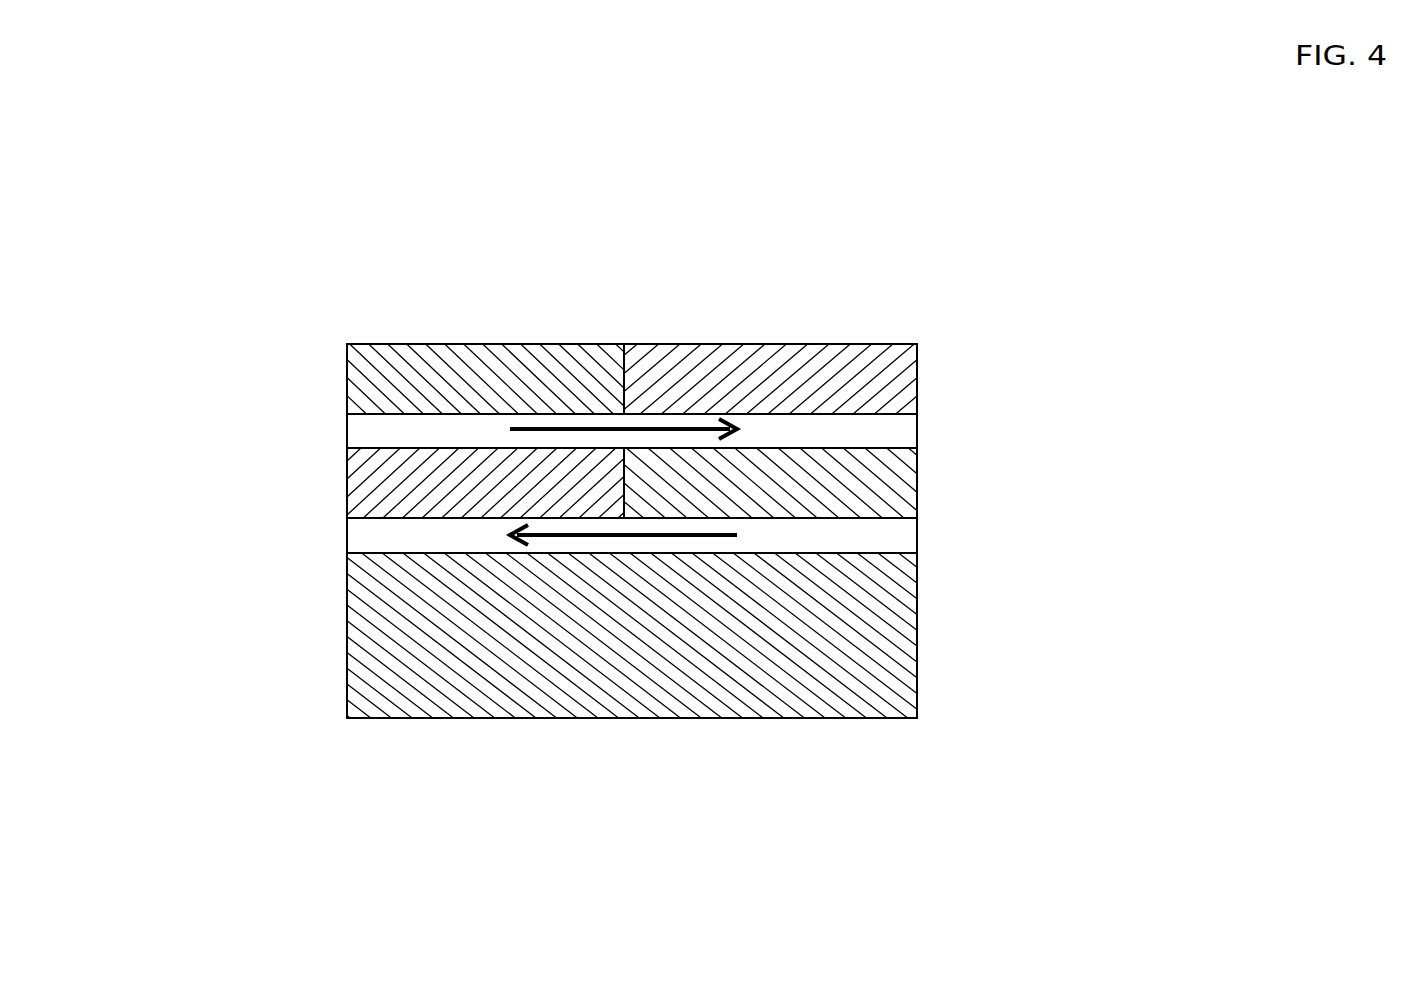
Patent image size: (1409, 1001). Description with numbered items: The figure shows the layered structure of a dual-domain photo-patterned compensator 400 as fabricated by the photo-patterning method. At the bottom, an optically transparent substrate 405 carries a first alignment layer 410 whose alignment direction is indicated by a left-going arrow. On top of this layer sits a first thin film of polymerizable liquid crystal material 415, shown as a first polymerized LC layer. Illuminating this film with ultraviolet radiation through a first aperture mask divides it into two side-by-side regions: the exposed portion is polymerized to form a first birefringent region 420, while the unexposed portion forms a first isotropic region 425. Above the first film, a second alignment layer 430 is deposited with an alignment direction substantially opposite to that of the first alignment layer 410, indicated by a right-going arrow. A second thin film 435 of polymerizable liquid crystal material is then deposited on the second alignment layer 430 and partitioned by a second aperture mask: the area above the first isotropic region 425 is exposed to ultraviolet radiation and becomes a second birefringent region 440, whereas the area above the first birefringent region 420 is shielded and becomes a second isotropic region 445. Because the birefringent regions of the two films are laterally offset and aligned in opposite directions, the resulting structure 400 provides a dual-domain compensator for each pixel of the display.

The dual-domain photo-patterned compensator structure 400 is at (380, 261).
The optically transparent substrate 405 is at (917, 639).
The first alignment layer 410 is at (917, 542).
The first thin film of polymerizable liquid crystal material 415 is at (345, 449).
The first birefringent region 420 is at (917, 494).
The first isotropic region 425 is at (372, 487).
The second alignment layer 430 is at (917, 434).
The second thin film of polymerizable liquid crystal material 435 is at (345, 345).
The second birefringent region 440 is at (373, 377).
The second isotropic region 445 is at (917, 388).